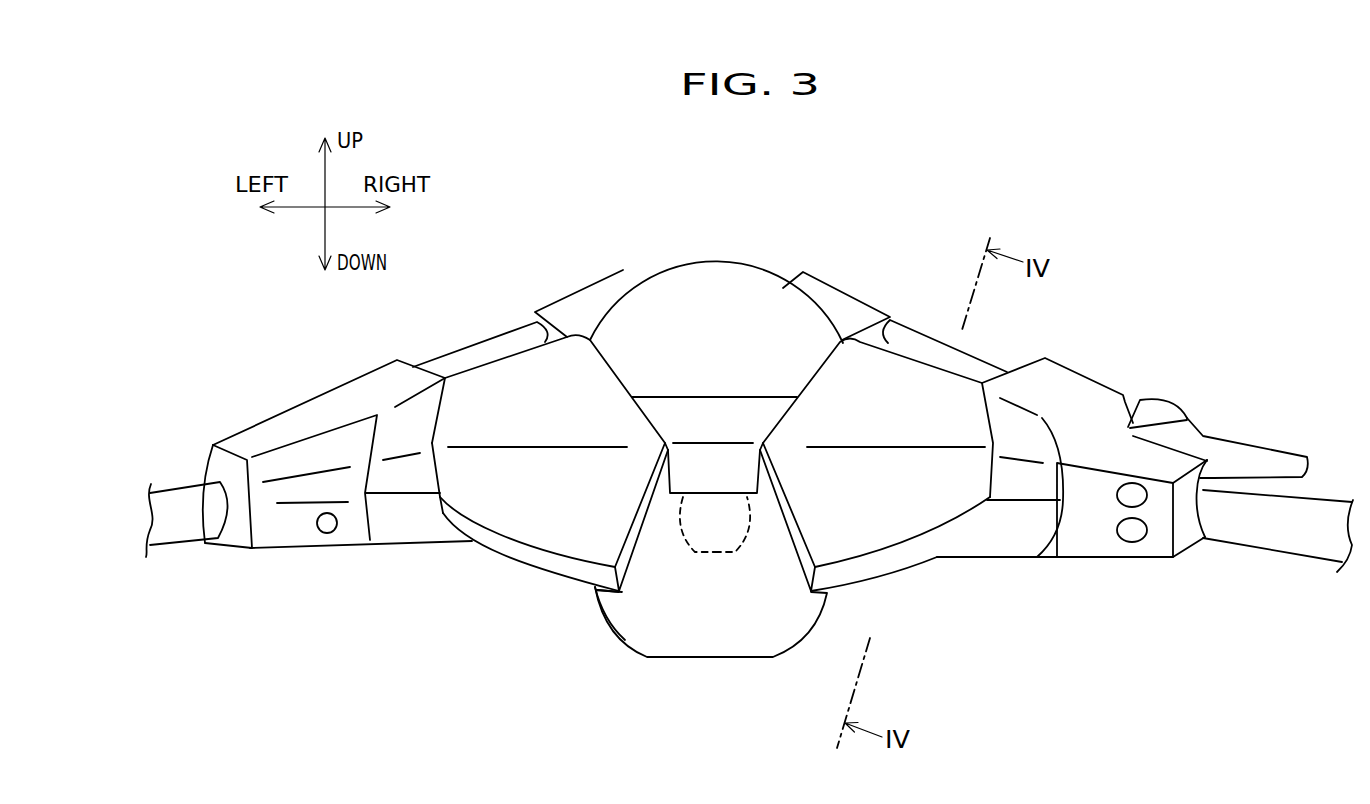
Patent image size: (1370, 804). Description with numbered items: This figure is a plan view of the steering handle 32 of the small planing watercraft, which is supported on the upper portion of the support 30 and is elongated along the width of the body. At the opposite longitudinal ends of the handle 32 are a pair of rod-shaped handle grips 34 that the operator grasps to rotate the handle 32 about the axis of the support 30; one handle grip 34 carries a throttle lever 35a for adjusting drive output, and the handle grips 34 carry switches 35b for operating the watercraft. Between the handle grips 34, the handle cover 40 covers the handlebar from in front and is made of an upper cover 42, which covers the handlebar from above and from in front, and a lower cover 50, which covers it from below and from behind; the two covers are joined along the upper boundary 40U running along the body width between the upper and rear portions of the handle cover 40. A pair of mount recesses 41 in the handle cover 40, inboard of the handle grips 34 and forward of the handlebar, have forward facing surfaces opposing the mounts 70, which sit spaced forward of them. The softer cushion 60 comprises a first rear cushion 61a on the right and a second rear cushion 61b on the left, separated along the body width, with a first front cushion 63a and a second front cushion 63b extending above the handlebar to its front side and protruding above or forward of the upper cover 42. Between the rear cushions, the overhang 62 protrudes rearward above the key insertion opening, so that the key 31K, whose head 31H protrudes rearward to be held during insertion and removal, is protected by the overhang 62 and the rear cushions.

The support 30 is at (707, 645).
The key 31K is at (698, 555).
The head 31H is at (726, 555).
The handle 32 is at (1084, 350).
The handle grips 34 is at (183, 485).
The throttle lever 35a is at (1280, 450).
The switches 35b is at (327, 533).
The handle cover 40 is at (761, 422).
The upper boundary 40U is at (1027, 508).
The mount recesses 41 is at (493, 357).
The upper cover 42 is at (683, 287).
The lower cover 50 is at (660, 565).
The cushion 60 is at (712, 489).
The first rear cushion 61a is at (933, 555).
The second rear cushion 61b is at (518, 553).
The overhang 62 is at (747, 477).
The first front cushion 63a is at (830, 383).
The second front cushion 63b is at (595, 362).
The mounts 70 is at (452, 352).